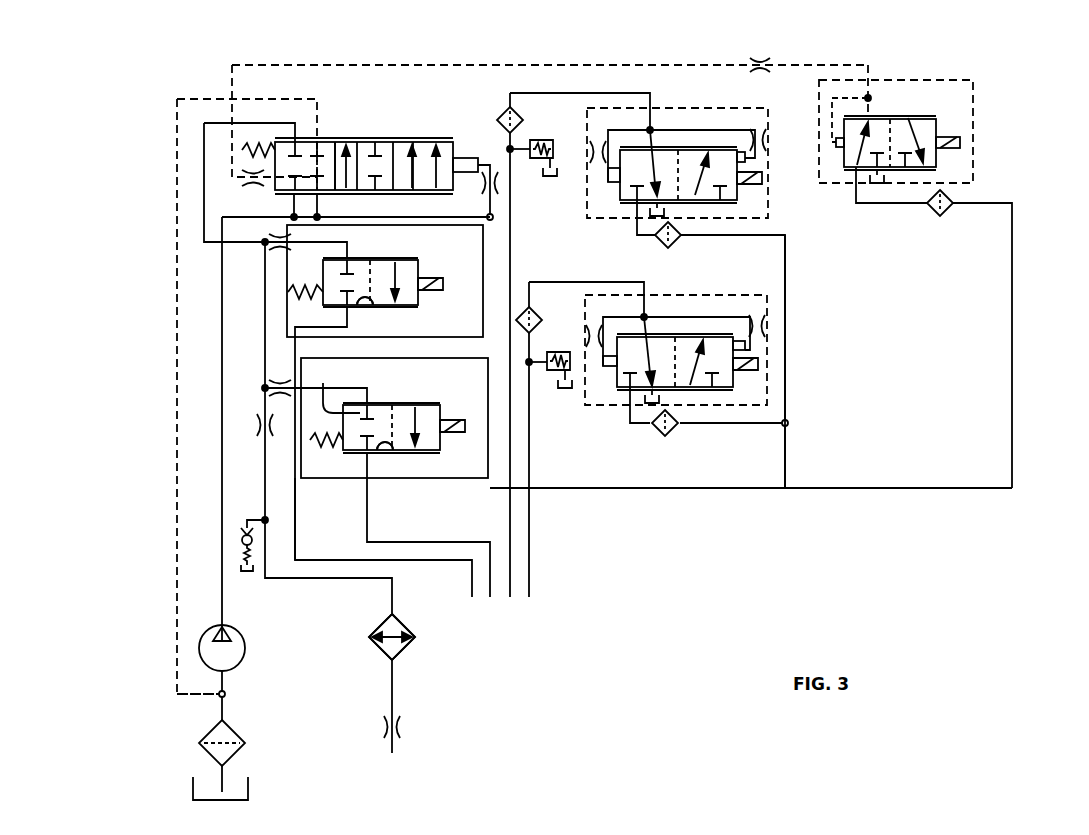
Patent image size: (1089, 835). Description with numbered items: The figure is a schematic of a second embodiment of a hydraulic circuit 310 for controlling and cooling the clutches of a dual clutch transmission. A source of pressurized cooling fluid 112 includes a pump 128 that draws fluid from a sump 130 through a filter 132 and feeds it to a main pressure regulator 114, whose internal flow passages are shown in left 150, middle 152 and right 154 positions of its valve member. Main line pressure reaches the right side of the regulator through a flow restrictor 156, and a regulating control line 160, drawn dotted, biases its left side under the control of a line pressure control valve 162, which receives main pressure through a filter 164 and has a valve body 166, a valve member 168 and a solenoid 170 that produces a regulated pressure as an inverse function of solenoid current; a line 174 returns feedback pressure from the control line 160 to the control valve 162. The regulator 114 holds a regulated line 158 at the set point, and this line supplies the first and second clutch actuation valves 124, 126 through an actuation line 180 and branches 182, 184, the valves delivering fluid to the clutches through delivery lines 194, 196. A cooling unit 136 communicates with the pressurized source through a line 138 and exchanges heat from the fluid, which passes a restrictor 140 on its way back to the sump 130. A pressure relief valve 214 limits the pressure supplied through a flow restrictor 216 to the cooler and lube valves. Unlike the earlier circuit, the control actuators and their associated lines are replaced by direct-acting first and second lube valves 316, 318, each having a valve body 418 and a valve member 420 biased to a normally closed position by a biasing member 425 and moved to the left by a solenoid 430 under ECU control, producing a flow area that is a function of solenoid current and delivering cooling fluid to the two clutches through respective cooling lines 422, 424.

The source of pressurized cooling fluid 112 is at (142, 667).
The main pressure regulator 114 is at (389, 108).
The first clutch actuation valve 124 is at (796, 338).
The second clutch actuation valve 126 is at (777, 130).
The pump 128 is at (245, 648).
The sump 130 is at (222, 800).
The filter 132 is at (205, 722).
The cooling unit 136 is at (402, 648).
The line 138 is at (392, 593).
The restrictor 140 is at (400, 727).
The left position 150 is at (295, 165).
The middle position 152 is at (339, 150).
The right position 154 is at (421, 150).
The flow restrictor 156 is at (498, 182).
The regulated line 158 is at (655, 488).
The regulating control line 160 is at (270, 65).
The line pressure control valve 162 is at (990, 90).
The filter 164 is at (955, 210).
The valve body 166 is at (908, 118).
The valve member 168 is at (937, 127).
The solenoid 170 is at (948, 148).
The line 174 is at (838, 108).
The actuation line 180 is at (786, 453).
The branch 182 is at (710, 423).
The branch 184 is at (786, 260).
The delivery line 194 is at (572, 282).
The delivery line 196 is at (548, 93).
The pressure relief valve 214 is at (240, 535).
The flow restrictor 216 is at (250, 423).
The hydraulic circuit 310 is at (158, 84).
The first lube valve 316 is at (408, 385).
The second lube valve 318 is at (465, 215).
The valve body 418 is at (370, 313).
The valve member 420 is at (428, 296).
The cooling line 422 is at (368, 505).
The cooling line 424 is at (300, 548).
The biasing member 425 is at (310, 445).
The solenoid 430 is at (443, 285).